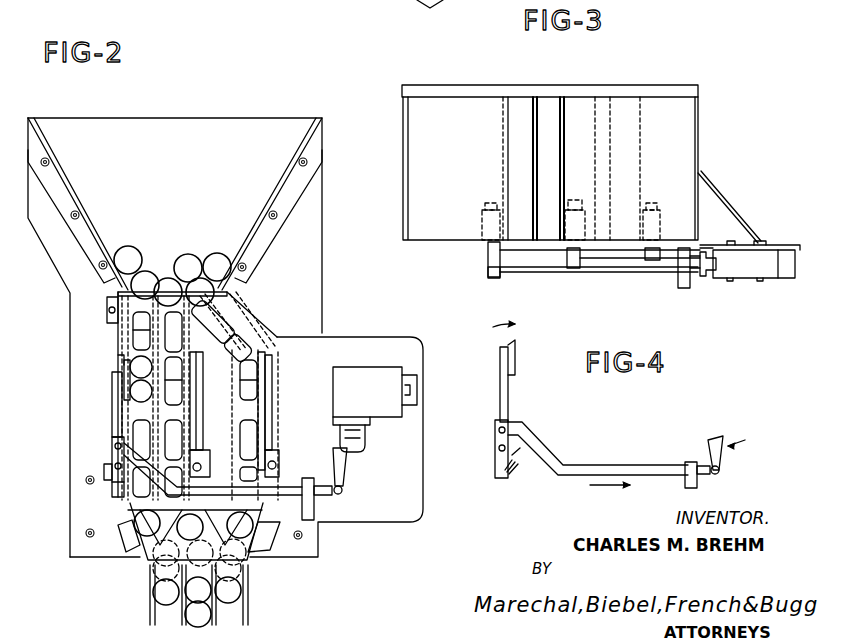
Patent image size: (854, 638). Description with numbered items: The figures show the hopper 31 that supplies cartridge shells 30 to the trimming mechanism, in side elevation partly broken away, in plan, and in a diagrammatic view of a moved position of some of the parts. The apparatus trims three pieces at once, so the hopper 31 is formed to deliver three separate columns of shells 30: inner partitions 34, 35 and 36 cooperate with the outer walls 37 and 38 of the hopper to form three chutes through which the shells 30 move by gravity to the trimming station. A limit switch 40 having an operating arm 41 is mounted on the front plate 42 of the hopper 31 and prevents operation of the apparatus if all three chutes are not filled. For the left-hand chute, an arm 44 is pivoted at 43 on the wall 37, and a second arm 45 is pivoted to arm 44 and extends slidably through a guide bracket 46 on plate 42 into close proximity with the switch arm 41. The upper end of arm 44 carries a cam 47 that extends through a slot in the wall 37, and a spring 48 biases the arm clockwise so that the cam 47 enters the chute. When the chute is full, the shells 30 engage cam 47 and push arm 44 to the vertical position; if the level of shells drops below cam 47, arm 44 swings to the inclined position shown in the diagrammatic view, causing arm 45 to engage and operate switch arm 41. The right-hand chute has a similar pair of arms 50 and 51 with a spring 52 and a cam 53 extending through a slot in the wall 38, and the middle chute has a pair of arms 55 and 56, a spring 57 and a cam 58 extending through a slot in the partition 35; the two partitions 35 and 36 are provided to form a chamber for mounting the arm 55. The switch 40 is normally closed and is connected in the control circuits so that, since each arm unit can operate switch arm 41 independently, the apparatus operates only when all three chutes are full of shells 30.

In FIG. 2, the cartridge shells 30 is at (215, 263).
In FIG. 2, the hopper 31 is at (193, 108).
In FIG. 3, the hopper 31 is at (400, 72).
In FIG. 3, the inner partition 34 is at (535, 110).
In FIG. 3, the inner partition 35 is at (562, 110).
In FIG. 3, the inner partition 36 is at (612, 120).
In FIG. 2, the outer wall 37 is at (120, 350).
In FIG. 3, the outer wall 37 is at (503, 115).
In FIG. 3, the outer wall 38 is at (640, 122).
In FIG. 2, the limit switch 40 is at (368, 375).
In FIG. 3, the limit switch 40 is at (770, 278).
In FIG. 2, the operating arm 41 is at (345, 462).
In FIG. 3, the operating arm 41 is at (707, 278).
In FIG. 4, the operating arm 41 is at (715, 440).
In FIG. 2, the front plate 42 is at (397, 515).
In FIG. 3, the front plate 42 is at (783, 245).
In FIG. 2, the pivot 43 is at (115, 465).
In FIG. 4, the pivot 43 is at (500, 448).
In FIG. 2, the arm 44 is at (118, 395).
In FIG. 4, the arm 44 is at (503, 395).
In FIG. 2, the second arm 45 is at (160, 492).
In FIG. 3, the second arm 45 is at (533, 272).
In FIG. 4, the second arm 45 is at (570, 472).
In FIG. 2, the guide bracket 46 is at (310, 508).
In FIG. 3, the guide bracket 46 is at (685, 290).
In FIG. 4, the guide bracket 46 is at (688, 462).
In FIG. 2, the cam 47 is at (125, 373).
In FIG. 4, the cam 47 is at (512, 358).
In FIG. 3, the spring 48 is at (487, 205).
In FIG. 4, the spring 48 is at (505, 470).
In FIG. 2, the arm 50 is at (268, 398).
In FIG. 3, the arm 51 is at (668, 258).
In FIG. 3, the spring 52 is at (652, 205).
In FIG. 2, the cam 53 is at (265, 372).
In FIG. 3, the arm 55 is at (605, 262).
In FIG. 2, the arm 56 is at (197, 398).
In FIG. 3, the spring 57 is at (575, 205).
In FIG. 2, the cam 58 is at (197, 370).